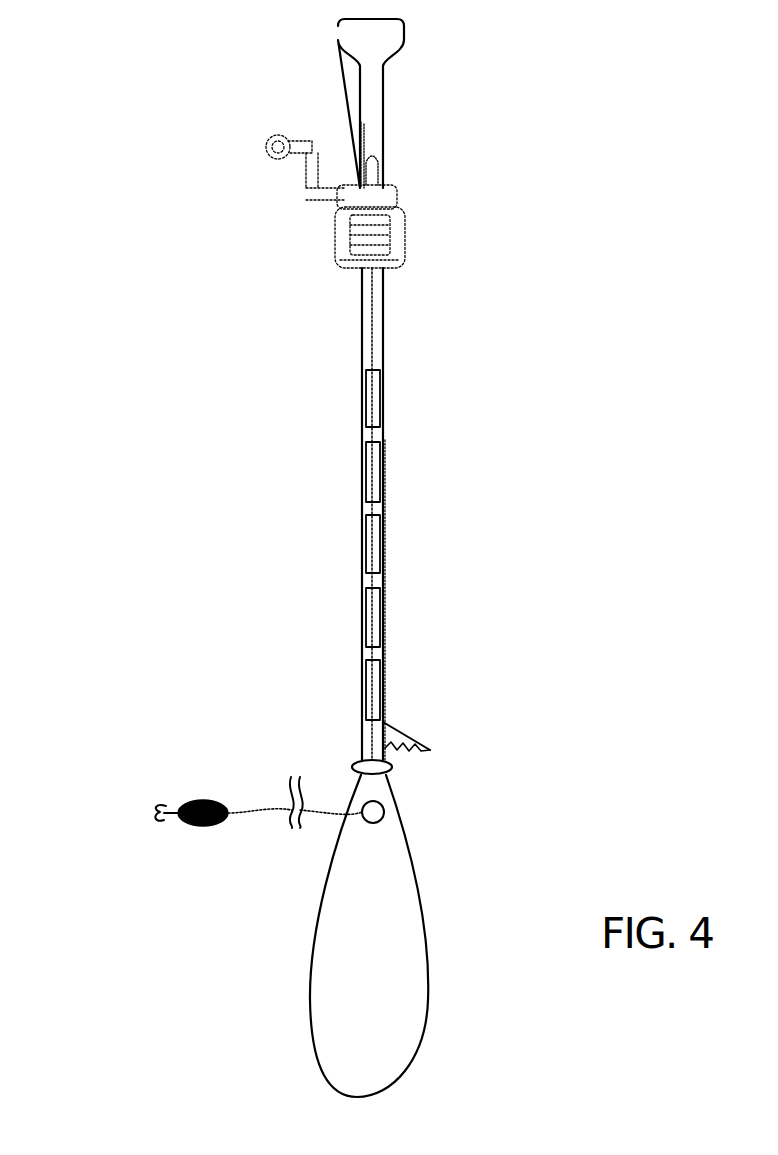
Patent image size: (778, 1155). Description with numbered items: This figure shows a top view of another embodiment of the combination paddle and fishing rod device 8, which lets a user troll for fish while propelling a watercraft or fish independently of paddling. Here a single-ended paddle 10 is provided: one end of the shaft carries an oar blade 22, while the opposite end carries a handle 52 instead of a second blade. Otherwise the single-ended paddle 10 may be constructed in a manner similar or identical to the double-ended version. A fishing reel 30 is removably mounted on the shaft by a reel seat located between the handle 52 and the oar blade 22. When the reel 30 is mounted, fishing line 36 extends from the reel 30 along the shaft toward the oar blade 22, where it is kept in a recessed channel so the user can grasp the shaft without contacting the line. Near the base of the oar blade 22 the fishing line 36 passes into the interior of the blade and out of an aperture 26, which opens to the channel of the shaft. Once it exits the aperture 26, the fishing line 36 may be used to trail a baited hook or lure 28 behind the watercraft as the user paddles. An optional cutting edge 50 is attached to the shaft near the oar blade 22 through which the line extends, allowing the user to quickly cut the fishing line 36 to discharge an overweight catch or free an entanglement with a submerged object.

The combination paddle and fishing rod device 8 is at (136, 413).
The single-ended paddle 10 is at (361, 583).
The oar blade 22 is at (407, 930).
The aperture 26 is at (384, 812).
The lure 28 is at (211, 827).
The fishing reel 30 is at (397, 225).
The fishing line 36 is at (372, 328).
The cutting edge 50 is at (404, 732).
The handle 52 is at (382, 46).